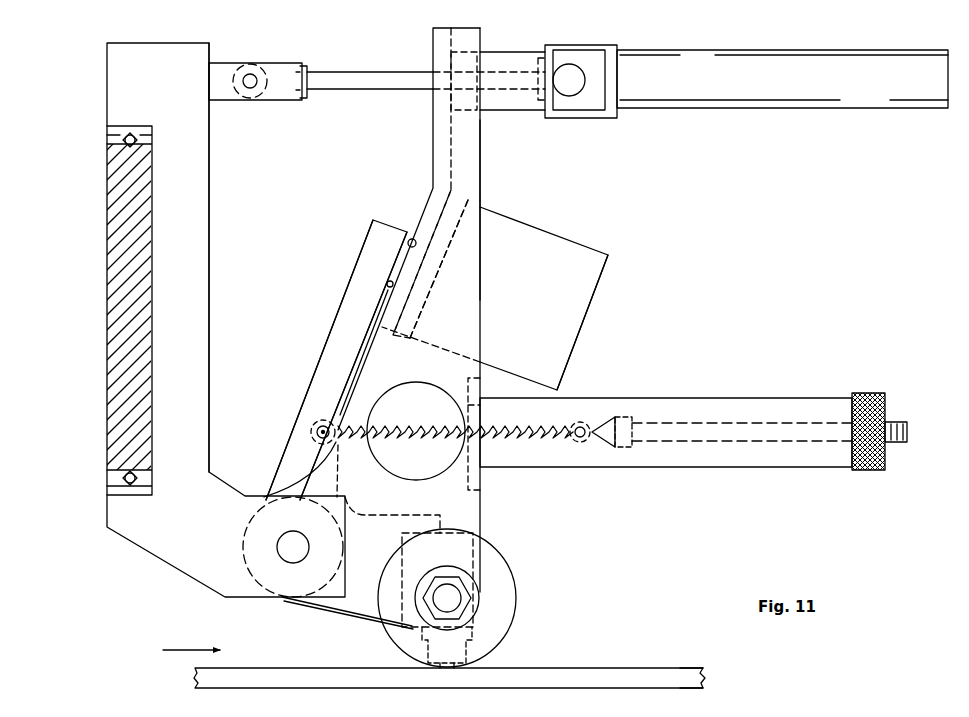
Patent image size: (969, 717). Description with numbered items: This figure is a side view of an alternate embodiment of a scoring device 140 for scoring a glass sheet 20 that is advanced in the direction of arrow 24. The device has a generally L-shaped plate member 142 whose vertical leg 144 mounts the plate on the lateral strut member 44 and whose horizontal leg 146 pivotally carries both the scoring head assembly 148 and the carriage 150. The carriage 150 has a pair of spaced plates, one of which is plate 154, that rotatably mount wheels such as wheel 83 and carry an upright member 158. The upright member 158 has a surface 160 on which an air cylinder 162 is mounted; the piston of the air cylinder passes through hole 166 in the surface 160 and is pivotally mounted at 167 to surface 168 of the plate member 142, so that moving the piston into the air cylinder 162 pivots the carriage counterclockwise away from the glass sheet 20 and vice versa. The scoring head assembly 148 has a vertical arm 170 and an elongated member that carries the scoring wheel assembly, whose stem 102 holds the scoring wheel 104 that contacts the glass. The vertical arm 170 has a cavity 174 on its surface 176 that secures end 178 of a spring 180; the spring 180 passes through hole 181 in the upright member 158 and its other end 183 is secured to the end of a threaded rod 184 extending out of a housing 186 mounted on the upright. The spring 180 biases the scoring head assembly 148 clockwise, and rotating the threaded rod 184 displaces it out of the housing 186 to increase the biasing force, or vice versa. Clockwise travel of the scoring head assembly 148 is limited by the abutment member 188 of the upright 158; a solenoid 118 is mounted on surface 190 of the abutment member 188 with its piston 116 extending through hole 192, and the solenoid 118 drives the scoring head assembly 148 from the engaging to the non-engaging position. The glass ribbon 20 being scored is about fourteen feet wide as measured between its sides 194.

The glass sheet 20 is at (585, 664).
The arrow 24 is at (190, 650).
The lateral strut member 44 is at (103, 365).
The wheel 83 is at (517, 593).
The stem 102 is at (460, 650).
The scoring wheel 104 is at (447, 668).
The piston 116 is at (405, 248).
The solenoid 118 is at (592, 241).
The scoring device 140 is at (703, 262).
The plate member 142 is at (224, 44).
The vertical leg 144 is at (150, 43).
The horizontal leg 146 is at (218, 595).
The scoring head assembly 148 is at (303, 385).
The carriage 150 is at (498, 153).
The spaced plate 154 is at (364, 606).
The upright member 158 is at (483, 183).
The surface 160 is at (482, 33).
The air cylinder 162 is at (745, 47).
The hole 166 is at (433, 65).
The pivot mounting 167 is at (252, 72).
The surface 168 is at (210, 187).
The vertical arm 170 is at (322, 348).
The cavity 174 is at (316, 433).
The surface 176 is at (387, 283).
The spring end 178 is at (314, 422).
The spring 180 is at (412, 410).
The hole 181 is at (481, 472).
The spring end 183 is at (583, 421).
The threaded rod 184 is at (705, 425).
The housing 186 is at (827, 398).
The abutment member 188 is at (412, 240).
The surface 190 is at (425, 248).
The hole 192 is at (420, 262).
The side 194 is at (672, 680).